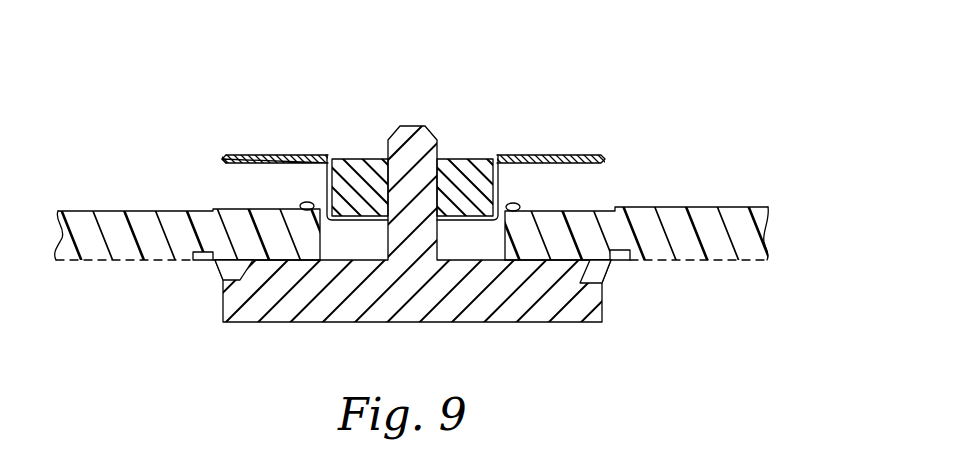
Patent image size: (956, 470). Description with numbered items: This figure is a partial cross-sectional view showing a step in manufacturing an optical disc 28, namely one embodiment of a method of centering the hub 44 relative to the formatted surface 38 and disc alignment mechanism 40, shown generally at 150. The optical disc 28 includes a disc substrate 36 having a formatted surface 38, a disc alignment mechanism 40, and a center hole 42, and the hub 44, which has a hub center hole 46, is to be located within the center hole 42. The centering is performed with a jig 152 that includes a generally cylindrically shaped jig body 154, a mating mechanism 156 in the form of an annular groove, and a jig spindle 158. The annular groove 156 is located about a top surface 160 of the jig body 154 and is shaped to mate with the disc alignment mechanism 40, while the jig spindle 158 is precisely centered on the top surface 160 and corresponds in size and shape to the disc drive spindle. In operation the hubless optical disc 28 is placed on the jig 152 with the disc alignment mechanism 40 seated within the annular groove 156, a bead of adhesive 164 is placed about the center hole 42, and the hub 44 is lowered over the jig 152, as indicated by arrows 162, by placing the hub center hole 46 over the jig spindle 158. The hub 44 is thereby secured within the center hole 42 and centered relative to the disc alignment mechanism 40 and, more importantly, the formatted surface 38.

The optical disc 28 is at (435, 224).
The disc substrate 36 is at (747, 230).
The formatted surface 38 is at (115, 262).
The disc alignment mechanism 40 is at (218, 270).
The center hole 42 is at (322, 237).
The hub 44 is at (318, 155).
The hub center hole 46 is at (427, 163).
The method of centering the hub 150 is at (357, 119).
The jig 152 is at (468, 232).
The jig body 154 is at (280, 318).
The mating mechanism 156 is at (582, 272).
The jig spindle 158 is at (417, 125).
The top surface 160 is at (453, 247).
The arrows 162 is at (303, 135).
The adhesive 164 is at (298, 203).